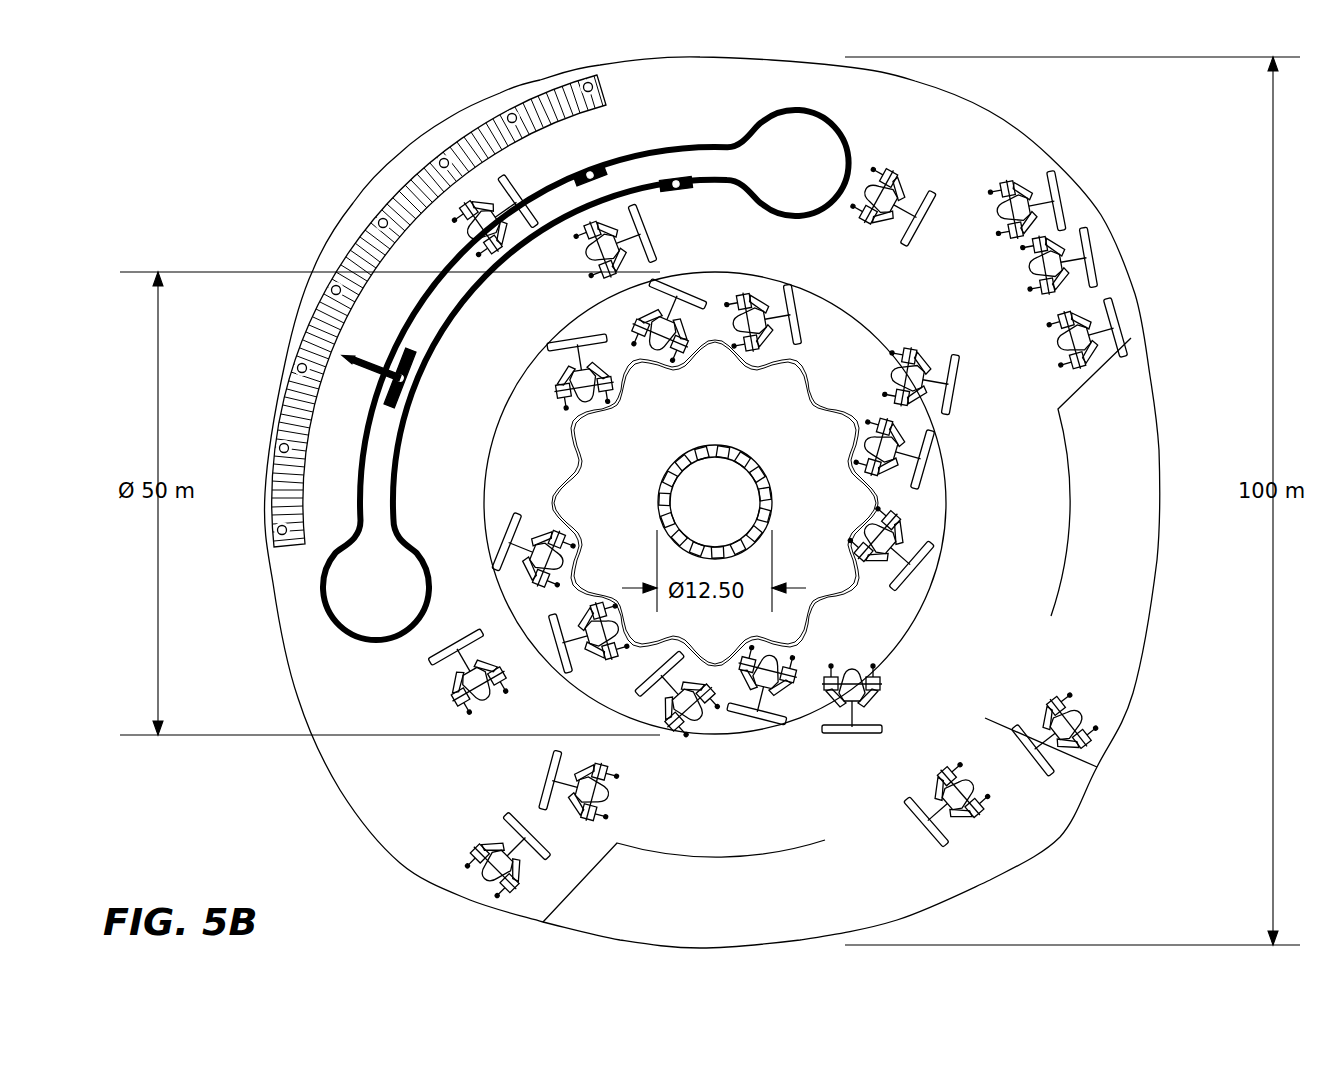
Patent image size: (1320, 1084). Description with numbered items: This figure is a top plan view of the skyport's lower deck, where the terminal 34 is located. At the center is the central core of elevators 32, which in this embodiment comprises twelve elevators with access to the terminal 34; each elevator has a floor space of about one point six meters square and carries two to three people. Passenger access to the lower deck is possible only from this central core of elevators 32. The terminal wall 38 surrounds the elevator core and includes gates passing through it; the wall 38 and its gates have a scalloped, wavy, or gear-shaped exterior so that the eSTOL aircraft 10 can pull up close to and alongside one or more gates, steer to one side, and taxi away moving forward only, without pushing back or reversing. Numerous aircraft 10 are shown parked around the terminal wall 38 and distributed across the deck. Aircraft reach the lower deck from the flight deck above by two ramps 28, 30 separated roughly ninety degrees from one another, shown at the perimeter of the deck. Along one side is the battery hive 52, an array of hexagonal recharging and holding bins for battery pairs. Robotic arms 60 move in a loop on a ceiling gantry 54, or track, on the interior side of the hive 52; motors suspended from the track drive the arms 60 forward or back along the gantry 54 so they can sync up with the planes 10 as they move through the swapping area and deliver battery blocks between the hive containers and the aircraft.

The eSTOL aircraft 10 is at (1083, 747).
The ramp 28 is at (622, 925).
The ramp 30 is at (1140, 372).
The central core of elevators 32 is at (817, 574).
The terminal 34 is at (1138, 453).
The terminal wall 38 is at (806, 387).
The battery hive 52 is at (467, 140).
The ceiling gantry 54 is at (843, 130).
The robotic arms 60 is at (677, 178).